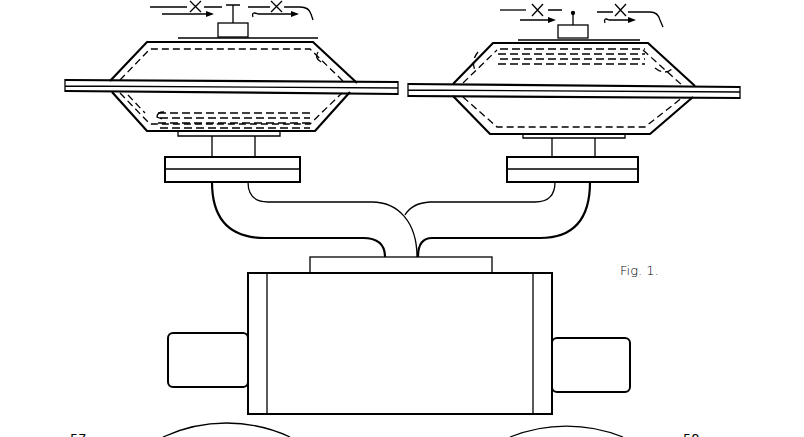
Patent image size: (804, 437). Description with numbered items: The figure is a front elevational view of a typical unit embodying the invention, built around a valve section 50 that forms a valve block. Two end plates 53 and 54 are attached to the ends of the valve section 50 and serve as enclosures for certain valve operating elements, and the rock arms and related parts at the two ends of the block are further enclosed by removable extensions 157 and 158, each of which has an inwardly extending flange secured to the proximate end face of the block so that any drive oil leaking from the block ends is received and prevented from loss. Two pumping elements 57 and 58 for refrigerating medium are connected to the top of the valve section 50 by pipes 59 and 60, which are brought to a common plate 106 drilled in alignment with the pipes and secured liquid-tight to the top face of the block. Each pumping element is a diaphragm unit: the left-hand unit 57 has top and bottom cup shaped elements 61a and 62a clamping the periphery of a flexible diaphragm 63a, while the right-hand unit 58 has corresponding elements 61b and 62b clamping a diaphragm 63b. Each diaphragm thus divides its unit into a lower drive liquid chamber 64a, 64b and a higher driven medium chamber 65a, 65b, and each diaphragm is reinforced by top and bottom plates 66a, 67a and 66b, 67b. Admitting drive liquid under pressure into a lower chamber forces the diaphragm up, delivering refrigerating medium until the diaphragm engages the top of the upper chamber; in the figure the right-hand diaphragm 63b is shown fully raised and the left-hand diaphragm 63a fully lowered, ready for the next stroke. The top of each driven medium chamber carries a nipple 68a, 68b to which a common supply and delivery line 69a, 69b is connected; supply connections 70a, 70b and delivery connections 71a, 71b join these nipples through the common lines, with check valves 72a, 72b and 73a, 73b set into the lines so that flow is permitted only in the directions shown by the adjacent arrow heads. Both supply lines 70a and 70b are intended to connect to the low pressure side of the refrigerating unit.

The valve section 50 is at (400, 343).
The end plate 53 is at (541, 305).
The end plate 54 is at (257, 305).
The pumping element 57 is at (210, 91).
The pumping element 58 is at (594, 93).
The pipe 59 is at (250, 217).
The pipe 60 is at (563, 218).
The top cup shaped element 61a is at (133, 53).
The top cup shaped element 61b is at (674, 63).
The bottom cup shaped element 62a is at (133, 117).
The bottom cup shaped element 62b is at (652, 136).
The flexible diaphragm 63a is at (65, 85).
The flexible diaphragm 63b is at (741, 97).
The lower drive liquid chamber 64a is at (318, 132).
The lower drive liquid chamber 64b is at (485, 125).
The higher driven medium chamber 65a is at (336, 56).
The higher driven medium chamber 65b is at (476, 66).
The top plate 66a is at (141, 129).
The top plate 66b is at (480, 56).
The bottom plate 67a is at (150, 138).
The bottom plate 67b is at (465, 80).
The nipple 68a is at (233, 21).
The nipple 68b is at (573, 25).
The supply and delivery line 69a is at (188, 24).
The supply and delivery line 69b is at (569, 28).
The supply connection 70a is at (153, 8).
The supply connection 70b is at (500, 10).
The delivery connection 71a is at (296, 17).
The delivery connection 71b is at (644, 21).
The check valve 72a is at (181, 14).
The check valve 72b is at (532, 21).
The check valve 73a is at (276, 23).
The check valve 73b is at (626, 28).
The common plate 106 is at (463, 270).
The removable extension 157 is at (591, 365).
The removable extension 158 is at (208, 360).